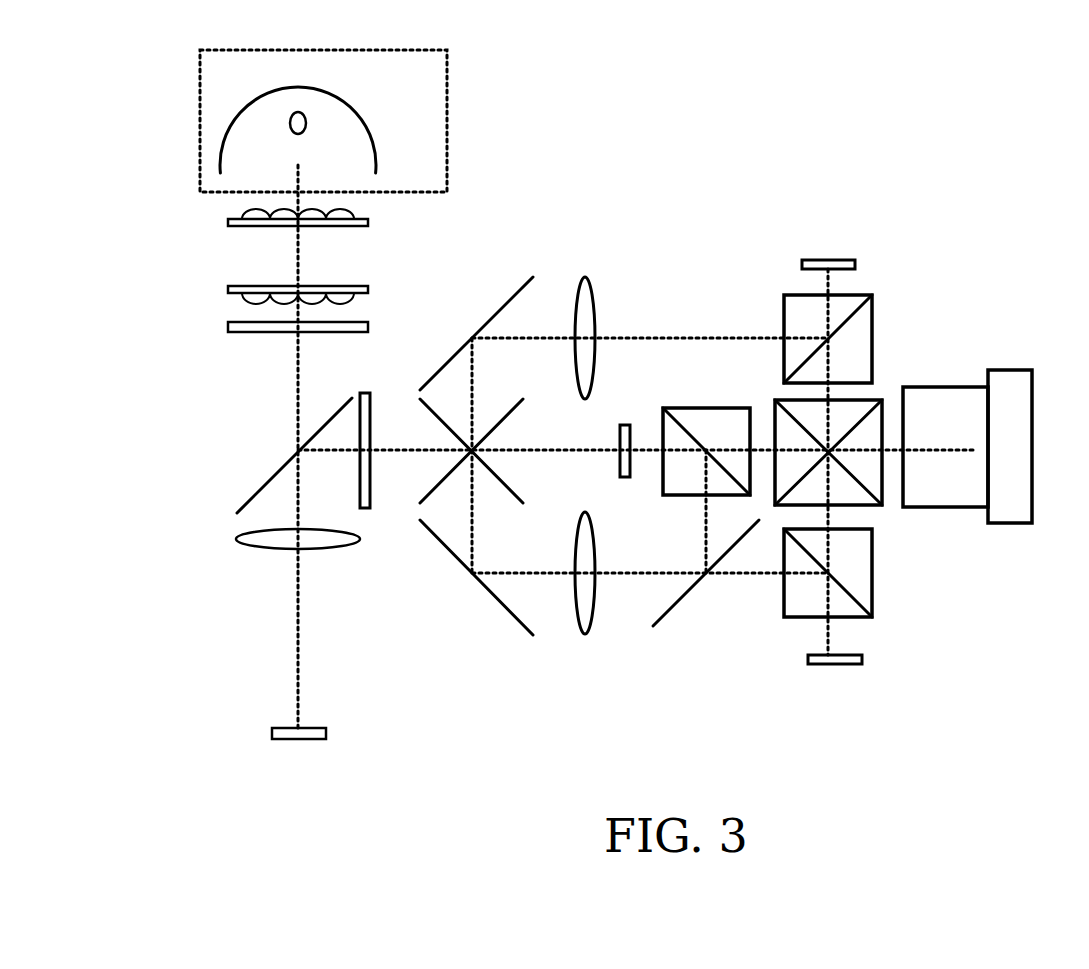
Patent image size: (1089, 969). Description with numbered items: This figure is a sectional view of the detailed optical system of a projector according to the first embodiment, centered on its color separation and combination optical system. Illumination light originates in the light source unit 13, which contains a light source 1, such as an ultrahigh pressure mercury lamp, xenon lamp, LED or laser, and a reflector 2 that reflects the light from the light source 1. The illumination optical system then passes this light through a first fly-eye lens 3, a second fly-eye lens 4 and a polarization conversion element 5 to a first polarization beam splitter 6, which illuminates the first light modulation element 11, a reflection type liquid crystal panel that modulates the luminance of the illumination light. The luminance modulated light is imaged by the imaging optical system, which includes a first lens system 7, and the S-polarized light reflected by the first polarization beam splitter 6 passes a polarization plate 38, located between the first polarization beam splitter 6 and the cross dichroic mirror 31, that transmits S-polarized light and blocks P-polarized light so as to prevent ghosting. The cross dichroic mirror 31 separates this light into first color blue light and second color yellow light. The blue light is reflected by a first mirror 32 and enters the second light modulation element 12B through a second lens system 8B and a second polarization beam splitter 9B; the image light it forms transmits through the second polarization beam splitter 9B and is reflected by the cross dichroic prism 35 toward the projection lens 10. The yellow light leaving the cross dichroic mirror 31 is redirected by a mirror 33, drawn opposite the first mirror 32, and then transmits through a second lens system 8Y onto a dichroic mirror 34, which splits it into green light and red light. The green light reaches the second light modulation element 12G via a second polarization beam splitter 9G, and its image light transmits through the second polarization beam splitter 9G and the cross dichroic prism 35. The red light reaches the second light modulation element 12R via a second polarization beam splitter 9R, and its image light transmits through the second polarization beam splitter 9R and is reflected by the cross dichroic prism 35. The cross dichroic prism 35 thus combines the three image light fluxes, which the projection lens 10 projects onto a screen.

The light source 1 is at (300, 118).
The reflector 2 is at (372, 130).
The first fly-eye lens 3 is at (228, 222).
The second fly-eye lens 4 is at (240, 287).
The polarization conversion element 5 is at (230, 324).
The first polarization beam splitter 6 is at (258, 488).
The first lens system 7 is at (264, 540).
The second lens system for B light 8B is at (585, 290).
The second lens system for Y light 8Y is at (585, 617).
The second polarization beam splitter for B light 9B is at (873, 322).
The second polarization beam splitter for G light 9G is at (706, 420).
The second polarization beam splitter for R light 9R is at (873, 582).
The projection lens 10 is at (1005, 386).
The first light modulation element 11 is at (273, 730).
The second light modulation element for B light 12B is at (816, 260).
The second light modulation element for G light 12G is at (620, 455).
The second light modulation element for R light 12R is at (817, 661).
The light source unit 13 is at (448, 70).
The cross dichroic mirror 31 is at (440, 491).
The first mirror 32 is at (512, 298).
The reflection mirror 33 is at (498, 602).
The dichroic mirror 34 is at (682, 600).
The cross dichroic prism 35 is at (883, 402).
The polarization plate 38 is at (366, 393).